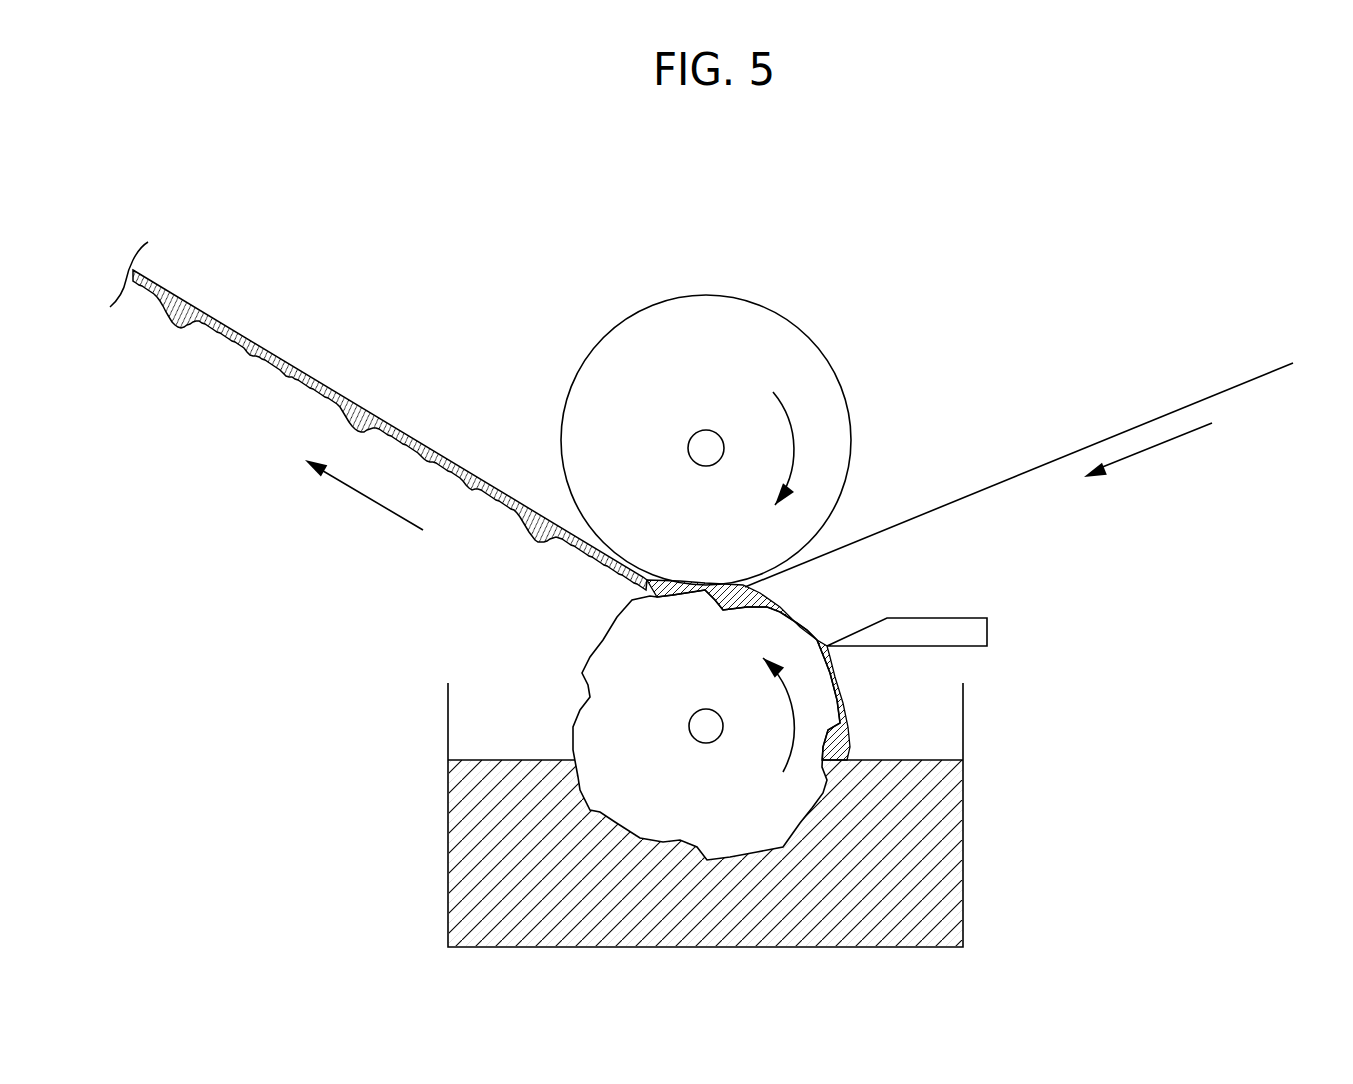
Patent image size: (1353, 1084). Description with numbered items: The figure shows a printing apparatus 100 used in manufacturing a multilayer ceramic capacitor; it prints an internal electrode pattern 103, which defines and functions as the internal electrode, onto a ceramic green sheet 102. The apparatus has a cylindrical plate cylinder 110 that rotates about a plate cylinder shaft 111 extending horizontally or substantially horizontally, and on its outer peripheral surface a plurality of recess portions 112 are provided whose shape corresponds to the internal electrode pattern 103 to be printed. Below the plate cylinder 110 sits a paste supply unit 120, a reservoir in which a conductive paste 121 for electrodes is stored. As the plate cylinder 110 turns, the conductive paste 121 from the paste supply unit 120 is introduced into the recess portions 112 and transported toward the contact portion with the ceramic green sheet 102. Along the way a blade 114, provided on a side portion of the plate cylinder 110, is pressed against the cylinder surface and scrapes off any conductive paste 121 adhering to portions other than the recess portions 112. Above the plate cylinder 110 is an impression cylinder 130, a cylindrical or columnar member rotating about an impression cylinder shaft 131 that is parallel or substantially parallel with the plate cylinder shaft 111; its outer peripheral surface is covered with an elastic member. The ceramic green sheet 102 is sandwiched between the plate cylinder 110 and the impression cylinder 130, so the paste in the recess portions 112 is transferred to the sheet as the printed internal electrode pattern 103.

The printing apparatus 100 is at (856, 182).
The ceramic green sheet 102 is at (1262, 378).
The internal electrode pattern 103 is at (390, 436).
The plate cylinder 110 is at (610, 658).
The plate cylinder shaft 111 is at (705, 727).
The recess portions 112 is at (573, 742).
The blade 114 is at (945, 618).
The paste supply unit 120 is at (963, 812).
The conductive paste 121 is at (922, 903).
The impression cylinder 130 is at (608, 378).
The impression cylinder shaft 131 is at (705, 448).